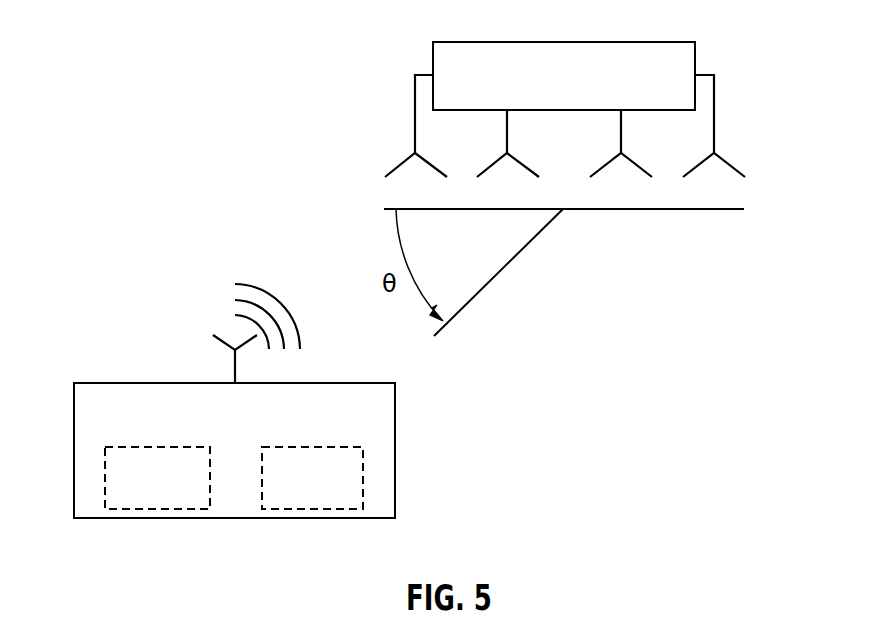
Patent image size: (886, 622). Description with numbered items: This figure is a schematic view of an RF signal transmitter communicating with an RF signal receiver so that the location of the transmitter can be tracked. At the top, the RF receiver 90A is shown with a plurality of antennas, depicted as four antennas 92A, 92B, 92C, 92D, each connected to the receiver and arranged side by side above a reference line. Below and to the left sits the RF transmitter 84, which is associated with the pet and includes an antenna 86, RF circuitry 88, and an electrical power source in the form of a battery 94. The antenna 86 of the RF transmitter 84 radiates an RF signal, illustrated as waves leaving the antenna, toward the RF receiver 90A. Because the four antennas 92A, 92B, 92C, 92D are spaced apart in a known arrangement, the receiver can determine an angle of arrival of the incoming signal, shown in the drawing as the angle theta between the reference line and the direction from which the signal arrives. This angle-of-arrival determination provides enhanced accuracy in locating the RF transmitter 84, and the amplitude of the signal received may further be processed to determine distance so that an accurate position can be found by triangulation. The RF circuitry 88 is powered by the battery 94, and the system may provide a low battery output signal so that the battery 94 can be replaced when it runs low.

The RF receiver 90A is at (673, 42).
The antenna 92A is at (394, 165).
The antenna 92B is at (493, 163).
The antenna 92C is at (636, 163).
The antenna 92D is at (735, 165).
The RF transmitter 84 is at (375, 383).
The antenna 86 is at (223, 342).
The RF circuitry 88 is at (117, 447).
The battery 94 is at (353, 447).